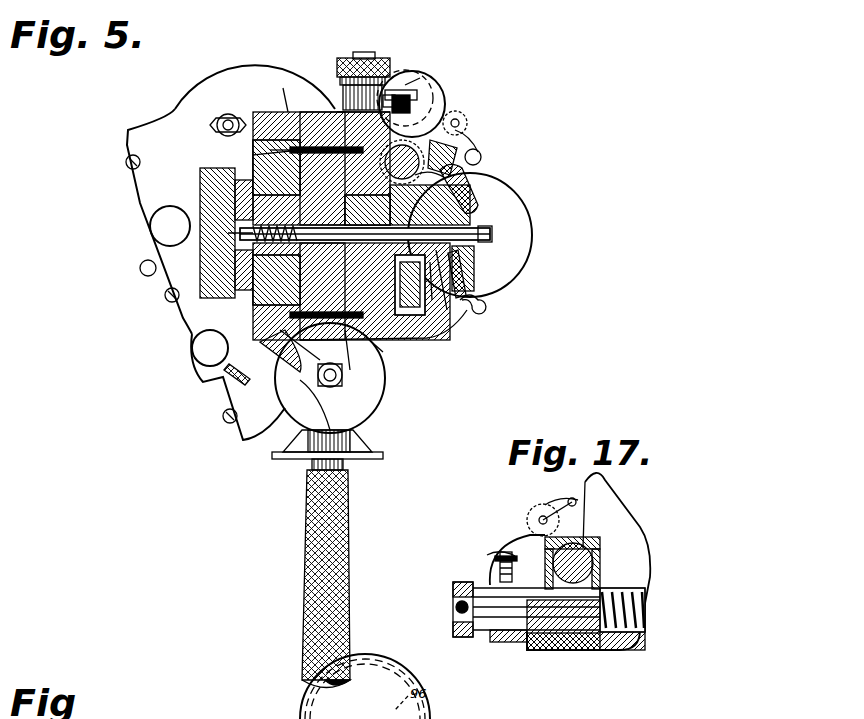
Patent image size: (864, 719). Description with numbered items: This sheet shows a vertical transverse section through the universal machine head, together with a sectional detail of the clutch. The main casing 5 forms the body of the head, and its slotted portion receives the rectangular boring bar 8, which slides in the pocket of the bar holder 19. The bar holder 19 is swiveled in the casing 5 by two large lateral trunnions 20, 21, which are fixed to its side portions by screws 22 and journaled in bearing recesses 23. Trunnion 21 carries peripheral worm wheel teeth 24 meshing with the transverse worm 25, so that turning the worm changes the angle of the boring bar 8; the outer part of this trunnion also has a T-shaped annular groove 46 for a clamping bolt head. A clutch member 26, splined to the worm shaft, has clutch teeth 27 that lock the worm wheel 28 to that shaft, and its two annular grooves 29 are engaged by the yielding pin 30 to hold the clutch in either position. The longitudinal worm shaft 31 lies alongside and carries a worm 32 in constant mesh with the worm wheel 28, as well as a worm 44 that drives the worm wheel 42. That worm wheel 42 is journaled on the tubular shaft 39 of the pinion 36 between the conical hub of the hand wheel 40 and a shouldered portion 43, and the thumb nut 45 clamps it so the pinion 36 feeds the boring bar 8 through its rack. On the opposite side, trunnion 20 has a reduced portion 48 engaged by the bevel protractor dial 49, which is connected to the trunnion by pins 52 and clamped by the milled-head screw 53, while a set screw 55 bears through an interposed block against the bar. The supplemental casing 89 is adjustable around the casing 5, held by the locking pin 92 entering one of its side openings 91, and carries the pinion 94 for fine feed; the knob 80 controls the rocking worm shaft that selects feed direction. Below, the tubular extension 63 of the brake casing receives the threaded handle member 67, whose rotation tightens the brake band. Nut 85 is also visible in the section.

In FIG. 5, the main casing 5 is at (225, 330).
In FIG. 5, the boring bar 8 is at (255, 292).
In FIG. 5, the bar holder 19 is at (305, 385).
In FIG. 5, the trunnion 20 is at (290, 345).
In FIG. 5, the trunnion 21 is at (365, 315).
In FIG. 5, the screws 22 is at (288, 112).
In FIG. 5, the bearing recesses 23 is at (355, 340).
In FIG. 5, the worm wheel teeth 24 is at (385, 350).
In FIG. 17, the transverse worm 25 is at (615, 650).
In FIG. 5, the clutch member 26 is at (378, 58).
In FIG. 17, the clutch member 26 is at (487, 582).
In FIG. 5, the clutch teeth 27 is at (232, 334).
In FIG. 17, the clutch teeth 27 is at (518, 642).
In FIG. 17, the worm wheel 28 is at (573, 650).
In FIG. 17, the annular grooves 29 is at (488, 630).
In FIG. 5, the yielding pin 30 is at (408, 92).
In FIG. 17, the yielding pin 30 is at (510, 552).
In FIG. 5, the longitudinal worm shaft 31 is at (455, 148).
In FIG. 17, the longitudinal worm shaft 31 is at (600, 540).
In FIG. 17, the worm 32 is at (620, 580).
In FIG. 5, the pinion 36 is at (385, 165).
In FIG. 5, the tubular shaft 39 is at (465, 265).
In FIG. 5, the hand wheel 40 is at (480, 304).
In FIG. 5, the worm wheel 42 is at (430, 318).
In FIG. 5, the shouldered portion 43 is at (441, 300).
In FIG. 5, the worm 44 is at (422, 82).
In FIG. 5, the thumb nut 45 is at (485, 240).
In FIG. 5, the annular groove 46 is at (430, 280).
In FIG. 5, the reduced diameter portion 48 is at (255, 157).
In FIG. 5, the bevel protractor dial 49 is at (300, 150).
In FIG. 5, the pins 52 is at (205, 200).
In FIG. 5, the screw 53 is at (178, 300).
In FIG. 5, the set screw 55 is at (240, 236).
In FIG. 5, the tubular extension 63 is at (348, 440).
In FIG. 5, the handle member 67 is at (312, 520).
In FIG. 5, the knob 80 is at (140, 268).
In FIG. 5, the nut 85 is at (216, 125).
In FIG. 5, the supplemental casing 89 is at (530, 225).
In FIG. 5, the side openings 91 is at (480, 152).
In FIG. 17, the side openings 91 is at (548, 505).
In FIG. 5, the locking pin 92 is at (462, 112).
In FIG. 17, the locking pin 92 is at (535, 512).
In FIG. 5, the pinion 94 is at (420, 70).